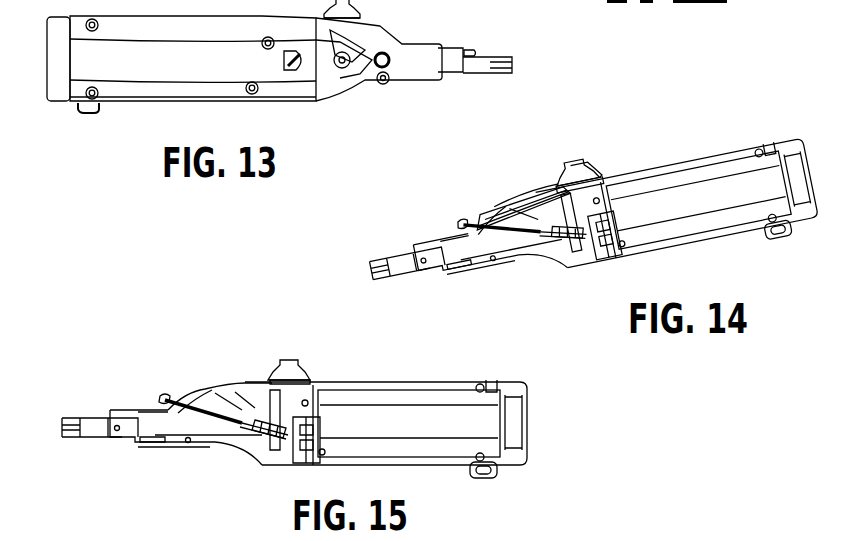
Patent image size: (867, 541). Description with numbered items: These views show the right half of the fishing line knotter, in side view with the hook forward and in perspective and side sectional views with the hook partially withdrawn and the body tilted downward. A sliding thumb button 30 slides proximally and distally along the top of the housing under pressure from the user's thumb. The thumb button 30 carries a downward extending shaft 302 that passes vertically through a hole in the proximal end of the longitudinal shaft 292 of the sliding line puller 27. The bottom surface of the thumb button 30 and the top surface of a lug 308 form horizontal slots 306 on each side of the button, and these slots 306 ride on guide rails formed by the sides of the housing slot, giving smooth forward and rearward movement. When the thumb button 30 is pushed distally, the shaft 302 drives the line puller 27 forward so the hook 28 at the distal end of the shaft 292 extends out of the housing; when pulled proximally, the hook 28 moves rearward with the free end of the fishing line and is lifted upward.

In FIG. 14, the sliding line puller 27 is at (552, 268).
In FIG. 13, the hook 28 is at (470, 51).
In FIG. 14, the hook 28 is at (466, 222).
In FIG. 15, the hook 28 is at (160, 397).
In FIG. 15, the sliding thumb button 30 is at (288, 360).
In FIG. 15, the longitudinal shaft 292 is at (217, 390).
In FIG. 14, the downward extending shaft 302 is at (557, 213).
In FIG. 15, the downward extending shaft 302 is at (268, 447).
In FIG. 15, the horizontal slots 306 is at (313, 398).
In FIG. 15, the lug 308 is at (325, 400).